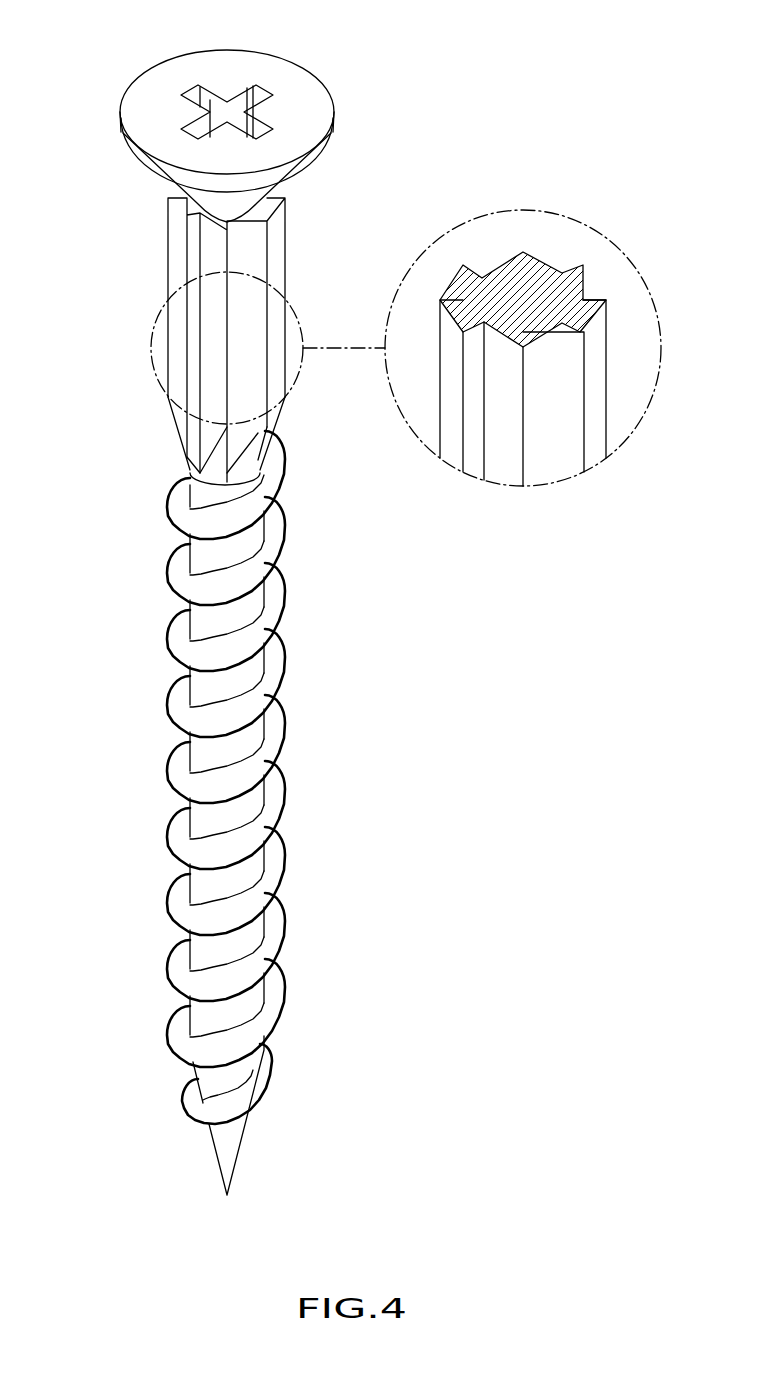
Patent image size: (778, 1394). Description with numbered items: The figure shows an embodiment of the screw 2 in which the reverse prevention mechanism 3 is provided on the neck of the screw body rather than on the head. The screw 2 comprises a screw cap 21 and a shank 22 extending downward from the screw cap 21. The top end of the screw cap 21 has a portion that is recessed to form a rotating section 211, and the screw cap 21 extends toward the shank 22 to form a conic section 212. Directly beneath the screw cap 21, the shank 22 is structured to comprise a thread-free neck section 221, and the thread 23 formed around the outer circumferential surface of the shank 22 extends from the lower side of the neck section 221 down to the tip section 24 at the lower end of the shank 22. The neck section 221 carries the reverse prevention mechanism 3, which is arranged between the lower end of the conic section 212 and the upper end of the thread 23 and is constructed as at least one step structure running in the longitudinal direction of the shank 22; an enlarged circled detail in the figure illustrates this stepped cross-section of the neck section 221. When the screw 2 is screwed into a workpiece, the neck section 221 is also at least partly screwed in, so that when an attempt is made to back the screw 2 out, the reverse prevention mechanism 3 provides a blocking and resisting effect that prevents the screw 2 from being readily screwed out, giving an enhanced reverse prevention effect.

The screw 2 is at (398, 597).
The screw cap 21 is at (205, 121).
The rotating section 211 is at (212, 95).
The conic section 212 is at (158, 183).
The shank 22 is at (402, 696).
The neck section 221 is at (296, 252).
The thread 23 is at (272, 663).
The tip section 24 is at (232, 1148).
The reverse prevention mechanism 3 is at (172, 352).